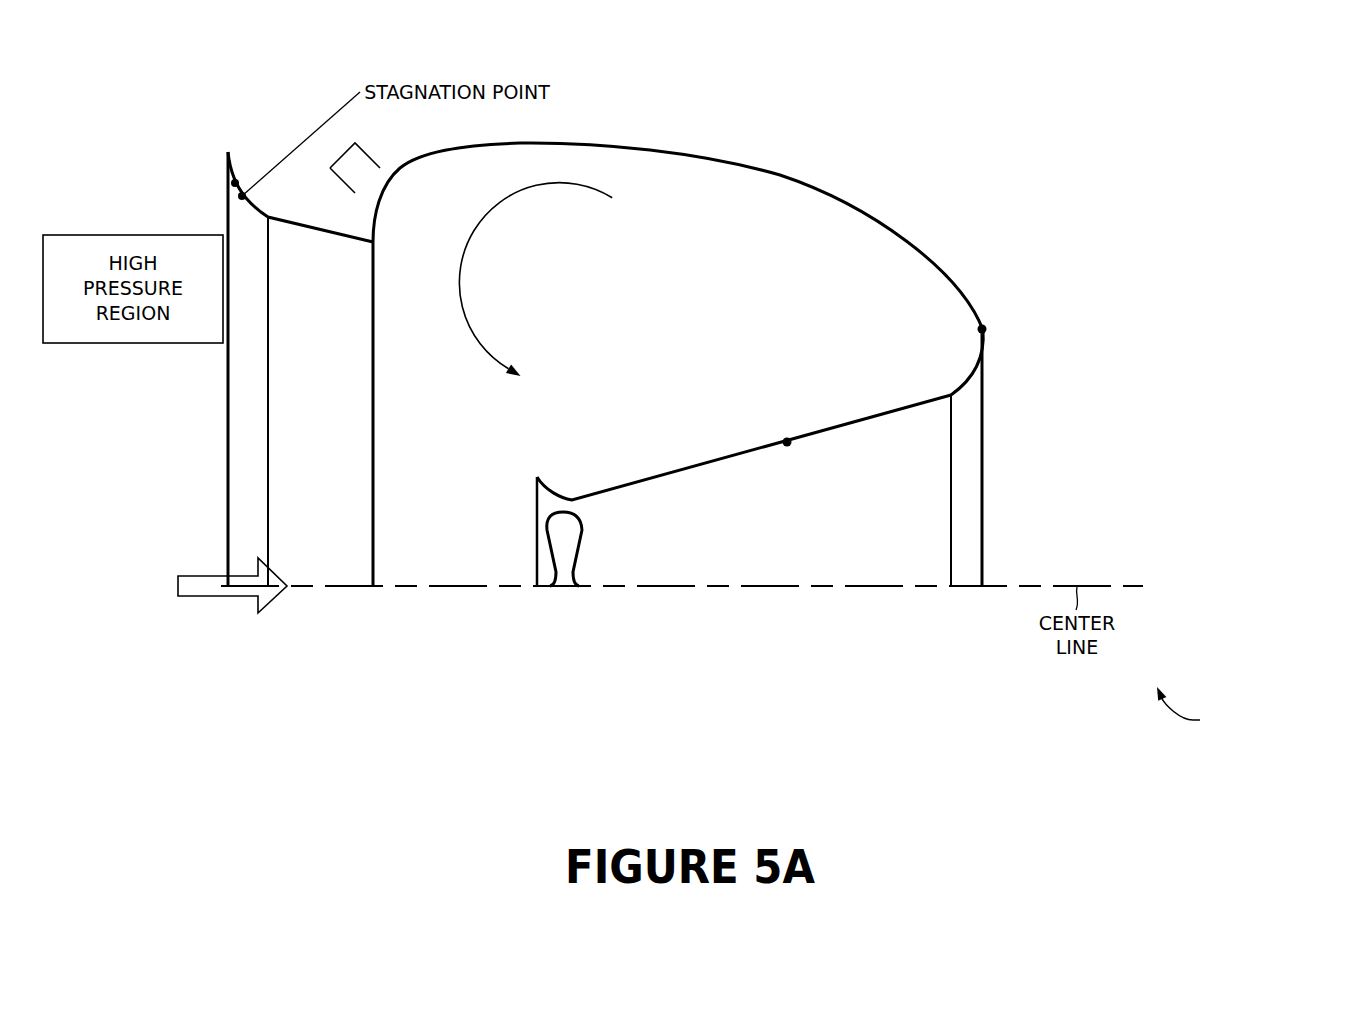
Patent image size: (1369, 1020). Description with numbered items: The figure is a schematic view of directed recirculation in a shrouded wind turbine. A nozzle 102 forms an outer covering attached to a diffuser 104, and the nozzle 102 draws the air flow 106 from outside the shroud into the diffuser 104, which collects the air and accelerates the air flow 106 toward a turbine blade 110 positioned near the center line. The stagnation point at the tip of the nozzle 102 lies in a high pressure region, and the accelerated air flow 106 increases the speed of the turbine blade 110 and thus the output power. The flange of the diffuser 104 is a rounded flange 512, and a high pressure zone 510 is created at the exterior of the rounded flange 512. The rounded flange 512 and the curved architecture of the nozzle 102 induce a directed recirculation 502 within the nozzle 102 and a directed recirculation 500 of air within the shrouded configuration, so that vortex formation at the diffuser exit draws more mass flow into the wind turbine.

The nozzle 102 is at (235, 183).
The diffuser 104 is at (787, 442).
The air flow 106 is at (202, 576).
The turbine blade 110 is at (562, 584).
The directed recirculation 500 is at (1255, 720).
The directed recirculation 502 is at (461, 283).
The high pressure zone 510 is at (365, 160).
The rounded flange 512 is at (983, 329).